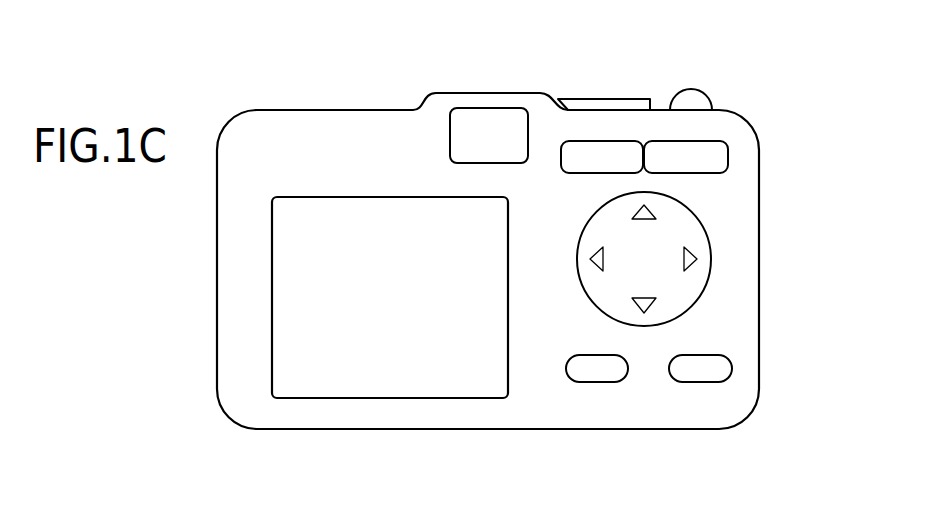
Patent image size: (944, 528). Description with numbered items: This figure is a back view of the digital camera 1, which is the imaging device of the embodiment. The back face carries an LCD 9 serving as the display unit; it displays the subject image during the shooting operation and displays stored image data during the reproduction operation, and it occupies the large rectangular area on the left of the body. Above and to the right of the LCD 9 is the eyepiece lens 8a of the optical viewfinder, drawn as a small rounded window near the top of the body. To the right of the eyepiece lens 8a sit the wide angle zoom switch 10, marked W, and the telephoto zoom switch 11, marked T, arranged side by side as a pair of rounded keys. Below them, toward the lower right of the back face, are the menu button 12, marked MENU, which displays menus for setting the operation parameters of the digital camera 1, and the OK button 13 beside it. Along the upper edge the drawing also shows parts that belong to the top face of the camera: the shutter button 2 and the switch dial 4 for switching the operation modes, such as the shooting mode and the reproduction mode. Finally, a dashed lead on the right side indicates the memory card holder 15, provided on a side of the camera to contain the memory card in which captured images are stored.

The digital camera 1 is at (767, 93).
The shutter button 2 is at (695, 93).
The switch dial 4 is at (603, 99).
The eyepiece lens 8a is at (447, 135).
The LCD 9 is at (378, 400).
The wide angle zoom switch 10 is at (560, 158).
The telephoto zoom switch 11 is at (728, 156).
The menu button 12 is at (567, 373).
The OK button 13 is at (718, 372).
The memory card holder 15 is at (741, 330).